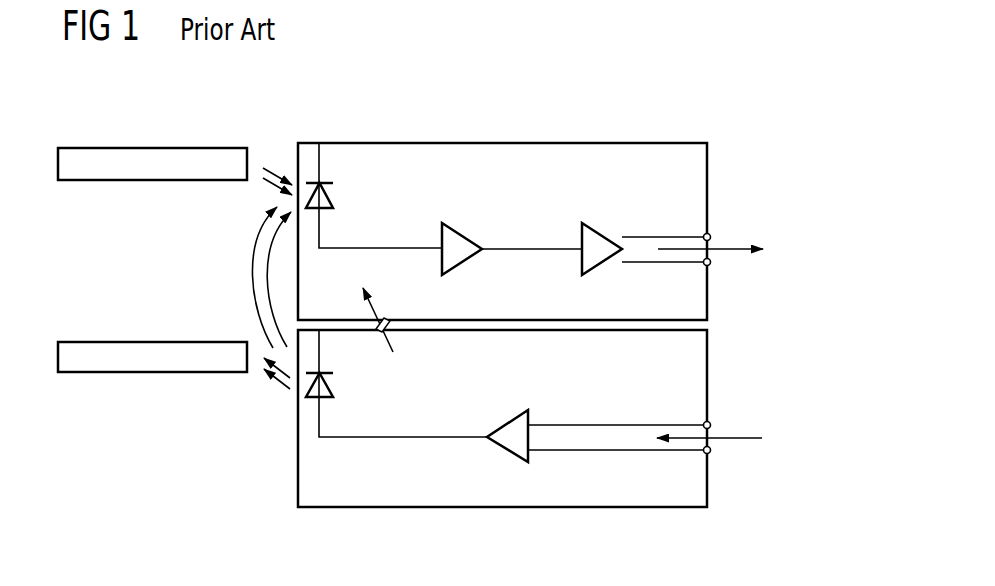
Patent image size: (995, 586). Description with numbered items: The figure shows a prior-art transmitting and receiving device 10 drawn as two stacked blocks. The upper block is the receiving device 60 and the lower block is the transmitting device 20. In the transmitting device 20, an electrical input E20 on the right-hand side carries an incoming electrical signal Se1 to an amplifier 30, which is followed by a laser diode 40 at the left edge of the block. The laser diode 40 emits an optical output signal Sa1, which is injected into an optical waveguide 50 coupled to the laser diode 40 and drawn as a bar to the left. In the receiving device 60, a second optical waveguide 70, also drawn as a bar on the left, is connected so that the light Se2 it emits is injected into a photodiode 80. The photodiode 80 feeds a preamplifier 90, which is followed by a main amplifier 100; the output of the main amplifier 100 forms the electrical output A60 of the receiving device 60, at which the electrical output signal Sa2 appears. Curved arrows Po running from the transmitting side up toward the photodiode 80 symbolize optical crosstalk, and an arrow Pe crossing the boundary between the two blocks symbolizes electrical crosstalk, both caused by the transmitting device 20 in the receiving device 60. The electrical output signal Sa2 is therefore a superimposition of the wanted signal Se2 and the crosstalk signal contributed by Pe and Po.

The transmitting and receiving device 10 is at (678, 107).
The transmitting device 20 is at (502, 508).
The amplifier 30 is at (508, 420).
The laser diode 40 is at (333, 383).
The optical waveguide 50 is at (153, 342).
The receiving device 60 is at (492, 142).
The second optical waveguide 70 is at (153, 148).
The photodiode 80 is at (333, 193).
The preamplifier 90 is at (465, 231).
The main amplifier 100 is at (602, 231).
The optical output signal Sa1 is at (278, 383).
The electrical output signal Sa2 is at (731, 247).
The electrical input signal Se1 is at (732, 437).
The light Se2 is at (265, 188).
The optical crosstalk arrow Po is at (253, 280).
The electrical crosstalk arrow Pe is at (385, 318).
The electrical output A60 is at (723, 261).
The electrical input E20 is at (723, 444).